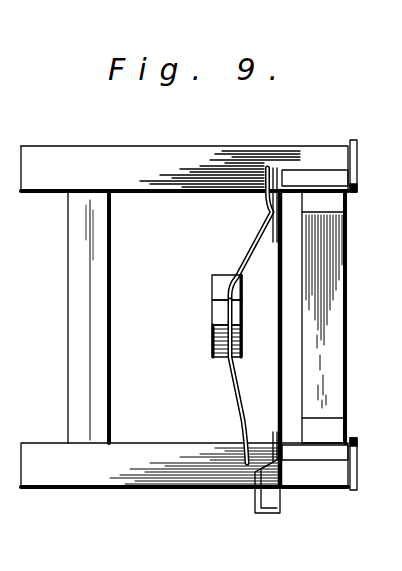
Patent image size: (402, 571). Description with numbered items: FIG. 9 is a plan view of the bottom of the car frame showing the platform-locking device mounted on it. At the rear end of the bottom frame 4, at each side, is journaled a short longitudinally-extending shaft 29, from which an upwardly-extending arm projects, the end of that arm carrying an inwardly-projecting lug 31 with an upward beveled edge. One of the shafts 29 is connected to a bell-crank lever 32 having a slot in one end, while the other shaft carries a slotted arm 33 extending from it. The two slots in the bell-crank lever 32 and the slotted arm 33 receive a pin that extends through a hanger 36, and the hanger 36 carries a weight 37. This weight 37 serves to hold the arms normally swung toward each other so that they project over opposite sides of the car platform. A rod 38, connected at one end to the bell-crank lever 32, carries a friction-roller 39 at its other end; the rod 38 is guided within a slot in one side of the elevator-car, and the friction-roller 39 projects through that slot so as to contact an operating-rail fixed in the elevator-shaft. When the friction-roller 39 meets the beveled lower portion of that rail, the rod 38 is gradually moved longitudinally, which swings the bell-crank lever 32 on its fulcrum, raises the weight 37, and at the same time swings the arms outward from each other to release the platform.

The bottom frame 4 is at (152, 490).
The shaft 29 is at (322, 178).
The lug 31 is at (359, 163).
The bell-crank lever 32 is at (247, 244).
The slotted arm 33 is at (232, 397).
The hanger 36 is at (215, 320).
The weight 37 is at (212, 287).
The rod 38 is at (278, 384).
The friction-roller 39 is at (265, 517).